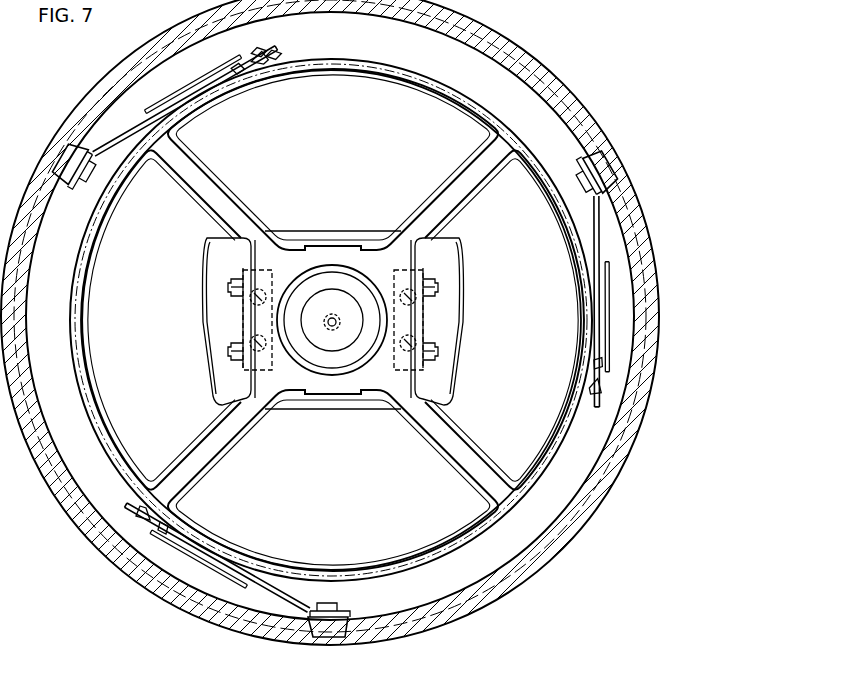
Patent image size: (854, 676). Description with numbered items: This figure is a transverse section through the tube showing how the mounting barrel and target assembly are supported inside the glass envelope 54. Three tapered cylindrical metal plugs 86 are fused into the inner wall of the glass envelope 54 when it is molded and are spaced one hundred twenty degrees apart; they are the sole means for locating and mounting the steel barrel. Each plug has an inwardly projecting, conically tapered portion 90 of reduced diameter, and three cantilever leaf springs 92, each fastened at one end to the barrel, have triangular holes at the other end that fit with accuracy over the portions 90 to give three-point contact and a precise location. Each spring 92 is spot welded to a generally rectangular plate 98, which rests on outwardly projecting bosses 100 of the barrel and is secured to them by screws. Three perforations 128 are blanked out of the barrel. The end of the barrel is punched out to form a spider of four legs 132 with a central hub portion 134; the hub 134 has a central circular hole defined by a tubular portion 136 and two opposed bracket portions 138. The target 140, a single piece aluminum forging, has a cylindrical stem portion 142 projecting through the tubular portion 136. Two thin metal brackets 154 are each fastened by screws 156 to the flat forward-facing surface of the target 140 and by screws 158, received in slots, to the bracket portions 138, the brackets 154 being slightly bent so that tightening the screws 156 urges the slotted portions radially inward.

The glass envelope 54 is at (80, 110).
The tapered cylindrical metal plugs 86 is at (62, 192).
The conically tapered portions 90 is at (88, 183).
The cantilever leaf springs 92 is at (103, 156).
The rectangular plate 98 is at (265, 47).
The bosses 100 is at (280, 57).
The perforations 128 is at (338, 73).
The legs 132 is at (212, 174).
The central hub portion 134 is at (380, 270).
The tubular portion 136 is at (298, 270).
The bracket portions 138 is at (241, 337).
The target 140 is at (462, 268).
The cylindrical stem portion 142 is at (348, 310).
The thin metal brackets 154 is at (245, 327).
The screws 156 is at (250, 300).
The screws 158 is at (426, 350).